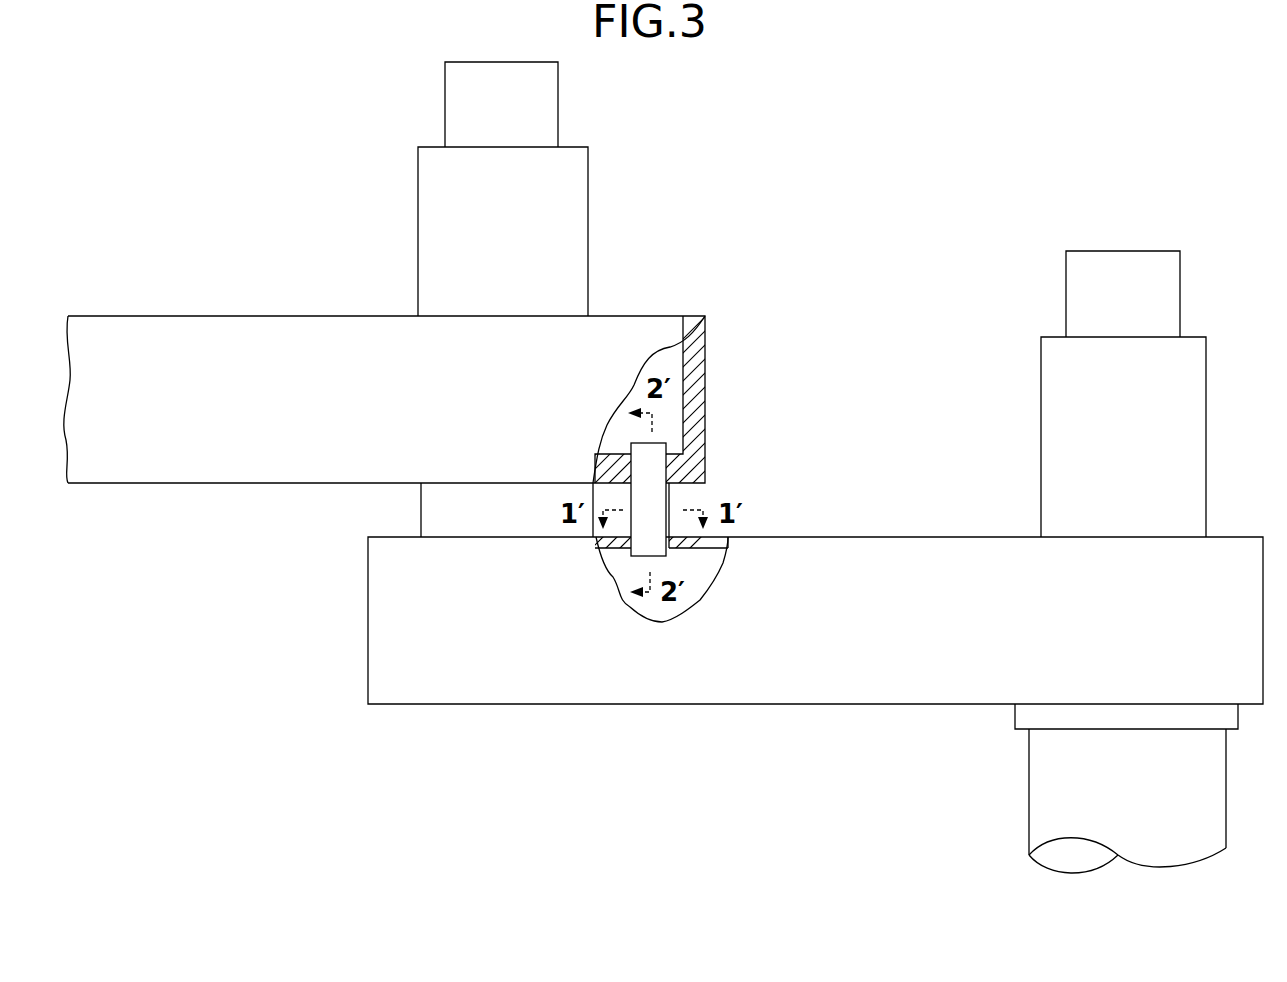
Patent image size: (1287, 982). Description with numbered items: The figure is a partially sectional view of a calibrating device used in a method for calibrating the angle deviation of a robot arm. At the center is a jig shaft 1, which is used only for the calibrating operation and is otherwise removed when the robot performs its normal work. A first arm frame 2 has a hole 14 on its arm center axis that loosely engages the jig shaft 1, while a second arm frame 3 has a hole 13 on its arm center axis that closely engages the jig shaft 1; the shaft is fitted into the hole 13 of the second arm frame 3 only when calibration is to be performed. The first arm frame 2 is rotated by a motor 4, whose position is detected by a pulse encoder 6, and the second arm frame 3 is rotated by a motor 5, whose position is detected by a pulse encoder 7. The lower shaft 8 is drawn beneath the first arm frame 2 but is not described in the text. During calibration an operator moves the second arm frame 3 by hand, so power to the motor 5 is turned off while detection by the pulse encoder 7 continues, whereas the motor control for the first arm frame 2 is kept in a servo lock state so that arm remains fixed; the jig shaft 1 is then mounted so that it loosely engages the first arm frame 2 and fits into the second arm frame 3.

The jig shaft 1 is at (707, 450).
The first arm frame 2 is at (1228, 555).
The second arm frame 3 is at (650, 332).
The motor 4 is at (1052, 410).
The motor 5 is at (565, 232).
The pulse encoder 6 is at (1158, 286).
The pulse encoder 7 is at (537, 113).
The shaft 8 is at (1037, 790).
The hole 13 is at (660, 437).
The hole 14 is at (668, 550).